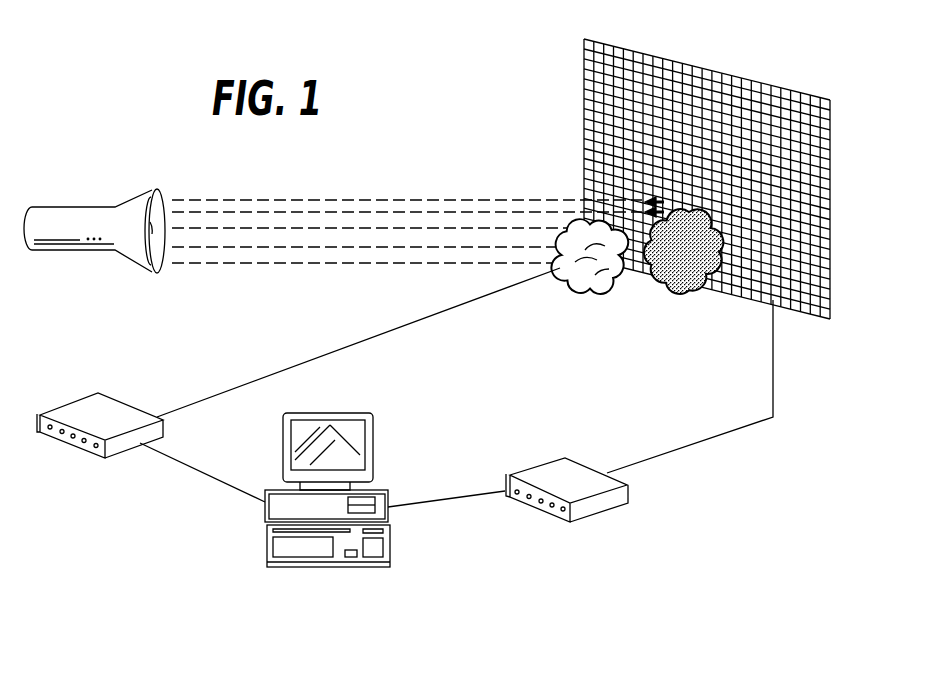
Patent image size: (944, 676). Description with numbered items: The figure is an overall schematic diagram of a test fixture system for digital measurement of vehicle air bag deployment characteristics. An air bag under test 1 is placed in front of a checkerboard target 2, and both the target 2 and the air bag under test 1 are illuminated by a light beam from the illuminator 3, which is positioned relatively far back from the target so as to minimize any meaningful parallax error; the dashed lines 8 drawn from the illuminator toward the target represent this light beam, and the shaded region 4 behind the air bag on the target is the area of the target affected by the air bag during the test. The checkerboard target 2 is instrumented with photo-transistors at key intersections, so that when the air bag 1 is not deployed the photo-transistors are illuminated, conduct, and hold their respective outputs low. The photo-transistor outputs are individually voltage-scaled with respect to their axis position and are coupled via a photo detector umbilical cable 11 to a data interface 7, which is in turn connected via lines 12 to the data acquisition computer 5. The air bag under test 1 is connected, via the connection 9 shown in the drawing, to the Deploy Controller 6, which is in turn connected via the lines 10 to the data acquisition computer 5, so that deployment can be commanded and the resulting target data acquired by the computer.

The air bag under test 1 is at (597, 290).
The checkerboard target 2 is at (740, 93).
The illuminator 3 is at (48, 225).
The shadow / dark particle cloud 4 is at (665, 287).
The data acquisition computer 5 is at (370, 447).
The Deploy Controller 6 is at (103, 418).
The data interface 7 is at (570, 475).
The light beams 8 is at (325, 200).
The connection line from cloud to unit 6 9 is at (331, 350).
The lines 10 is at (223, 453).
The photo detector umbilical cable 11 is at (773, 395).
The lines 12 is at (458, 499).